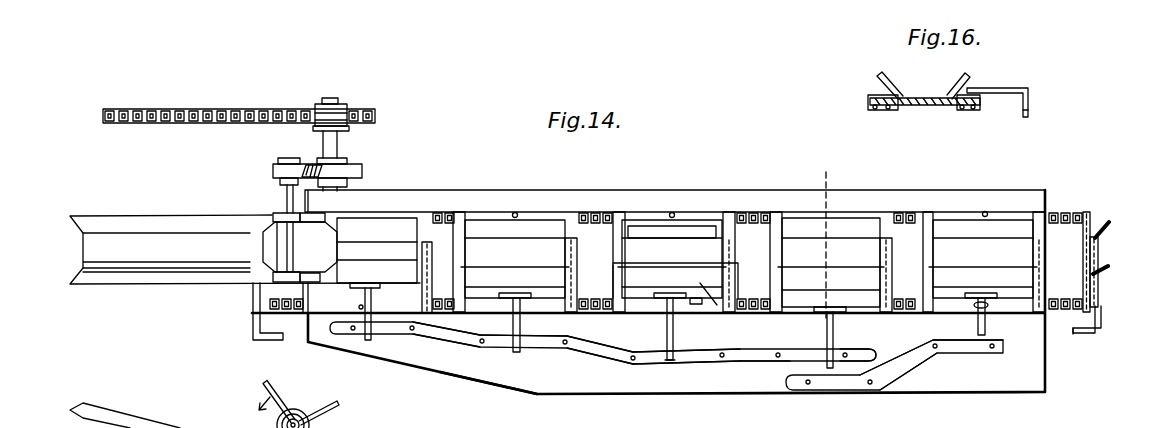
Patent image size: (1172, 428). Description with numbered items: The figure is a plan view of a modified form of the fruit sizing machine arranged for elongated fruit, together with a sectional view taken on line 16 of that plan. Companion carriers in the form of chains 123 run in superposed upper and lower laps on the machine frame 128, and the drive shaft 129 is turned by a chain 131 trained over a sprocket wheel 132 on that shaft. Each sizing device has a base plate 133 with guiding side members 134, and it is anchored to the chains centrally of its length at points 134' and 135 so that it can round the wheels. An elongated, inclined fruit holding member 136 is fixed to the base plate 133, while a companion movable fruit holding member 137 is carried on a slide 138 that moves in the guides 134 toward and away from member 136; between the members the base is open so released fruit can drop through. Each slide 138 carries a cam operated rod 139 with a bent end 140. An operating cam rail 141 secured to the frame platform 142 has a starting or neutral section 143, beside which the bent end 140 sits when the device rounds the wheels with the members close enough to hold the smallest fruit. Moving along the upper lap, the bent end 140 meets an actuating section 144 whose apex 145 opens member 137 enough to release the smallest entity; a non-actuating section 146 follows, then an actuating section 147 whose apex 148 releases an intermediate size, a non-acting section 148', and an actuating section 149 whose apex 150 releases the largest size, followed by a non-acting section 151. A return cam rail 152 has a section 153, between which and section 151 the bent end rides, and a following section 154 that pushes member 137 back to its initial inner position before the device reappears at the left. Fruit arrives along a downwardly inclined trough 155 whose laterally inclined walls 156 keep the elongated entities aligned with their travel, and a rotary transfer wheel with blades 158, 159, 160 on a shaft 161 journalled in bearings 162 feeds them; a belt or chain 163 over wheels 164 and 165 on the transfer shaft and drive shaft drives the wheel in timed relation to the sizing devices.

In FIG. 14, the section line 16 is at (815, 329).
In FIG. 14, the chains 123 is at (446, 212).
In FIG. 16, the chains 123 is at (875, 110).
In FIG. 14, the frame 128 is at (962, 190).
In FIG. 14, the drive shaft 129 is at (340, 148).
In FIG. 14, the chain 131 is at (232, 109).
In FIG. 14, the sprocket wheel 132 is at (345, 103).
In FIG. 14, the base plate 133 is at (640, 214).
In FIG. 16, the base plate 133 is at (873, 98).
In FIG. 14, the guiding side members 134 is at (673, 298).
In FIG. 14, the anchorage point 134' is at (697, 194).
In FIG. 14, the anchorage point 135 is at (666, 304).
In FIG. 14, the fruit holding member 136 is at (702, 228).
In FIG. 16, the fruit holding member 136 is at (877, 74).
In FIG. 14, the movable fruit holding member 137 is at (717, 305).
In FIG. 16, the movable fruit holding member 137 is at (966, 73).
In FIG. 14, the slide 138 is at (697, 304).
In FIG. 14, the cam operated rod 139 is at (667, 336).
In FIG. 16, the cam operated rod 139 is at (1012, 88).
In FIG. 14, the bent end 140 is at (673, 361).
In FIG. 16, the bent end 140 is at (1030, 110).
In FIG. 14, the operating cam rail 141 is at (471, 347).
In FIG. 14, the frame platform 142 is at (522, 386).
In FIG. 14, the starting or neutral section 143 is at (388, 338).
In FIG. 14, the actuating section 144 is at (466, 336).
In FIG. 14, the apex 145 is at (487, 348).
In FIG. 14, the non-actuating section 146 is at (544, 349).
In FIG. 14, the actuating section 147 is at (598, 350).
In FIG. 14, the apex 148 is at (601, 381).
In FIG. 14, the non-acting section 148' is at (686, 384).
In FIG. 14, the actuating section 149 is at (753, 356).
In FIG. 14, the apex 150 is at (783, 388).
In FIG. 14, the non-acting section 151 is at (852, 352).
In FIG. 14, the return cam rail 152 is at (903, 368).
In FIG. 14, the section 153 is at (839, 377).
In FIG. 14, the following section 154 is at (906, 350).
In FIG. 14, the trough 155 is at (84, 250).
In FIG. 14, the laterally inclined walls 156 is at (130, 221).
In FIG. 14, the blade 158 is at (258, 426).
In FIG. 14, the blade 159 is at (275, 393).
In FIG. 14, the blade 160 is at (330, 400).
In FIG. 14, the shaft 161 is at (293, 422).
In FIG. 14, the bearings 162 is at (272, 214).
In FIG. 14, the belt or chain 163 is at (311, 165).
In FIG. 14, the wheel 164 is at (280, 162).
In FIG. 14, the wheel 165 is at (350, 165).